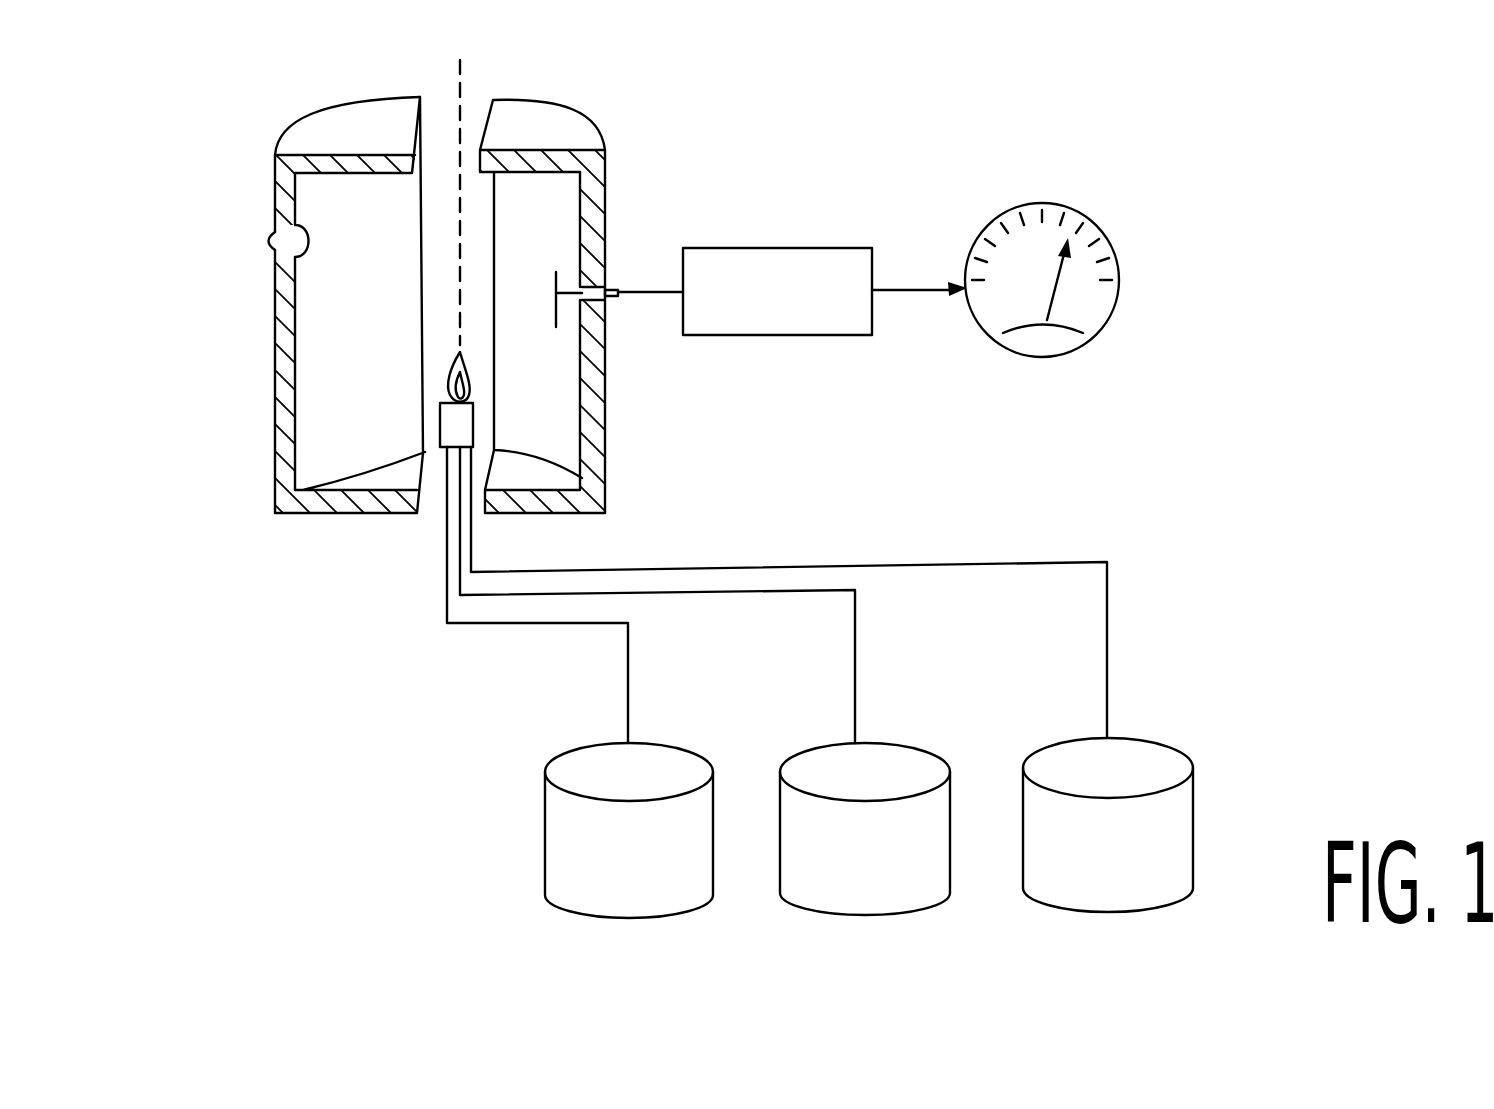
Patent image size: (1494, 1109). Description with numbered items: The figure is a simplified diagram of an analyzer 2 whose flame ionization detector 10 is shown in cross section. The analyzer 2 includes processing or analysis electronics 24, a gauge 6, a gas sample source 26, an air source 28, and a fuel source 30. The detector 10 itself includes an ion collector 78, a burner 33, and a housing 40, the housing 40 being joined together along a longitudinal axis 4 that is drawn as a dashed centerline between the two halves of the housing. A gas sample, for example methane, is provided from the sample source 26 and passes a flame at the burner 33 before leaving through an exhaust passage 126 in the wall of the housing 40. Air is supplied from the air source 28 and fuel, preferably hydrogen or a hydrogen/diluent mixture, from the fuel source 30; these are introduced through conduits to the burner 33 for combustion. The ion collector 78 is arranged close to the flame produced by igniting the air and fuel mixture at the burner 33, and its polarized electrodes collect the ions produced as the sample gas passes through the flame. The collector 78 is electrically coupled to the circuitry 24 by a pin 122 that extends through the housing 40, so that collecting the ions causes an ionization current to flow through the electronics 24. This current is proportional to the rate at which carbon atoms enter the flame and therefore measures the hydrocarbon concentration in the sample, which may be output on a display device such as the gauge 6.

The analyzer 2 is at (330, 724).
The longitudinal axis 4 is at (462, 70).
The gauge 6 is at (1055, 355).
The flame ionization detector 10 is at (555, 296).
The processing or analysis electronics 24 is at (833, 335).
The gas sample source 26 is at (1170, 900).
The air source 28 is at (935, 912).
The fuel source 30 is at (683, 913).
The burner 33 is at (428, 422).
The housing 40 is at (335, 118).
The ion collector 78 is at (556, 273).
The pin 122 is at (614, 304).
The exhaust passage 126 is at (275, 243).